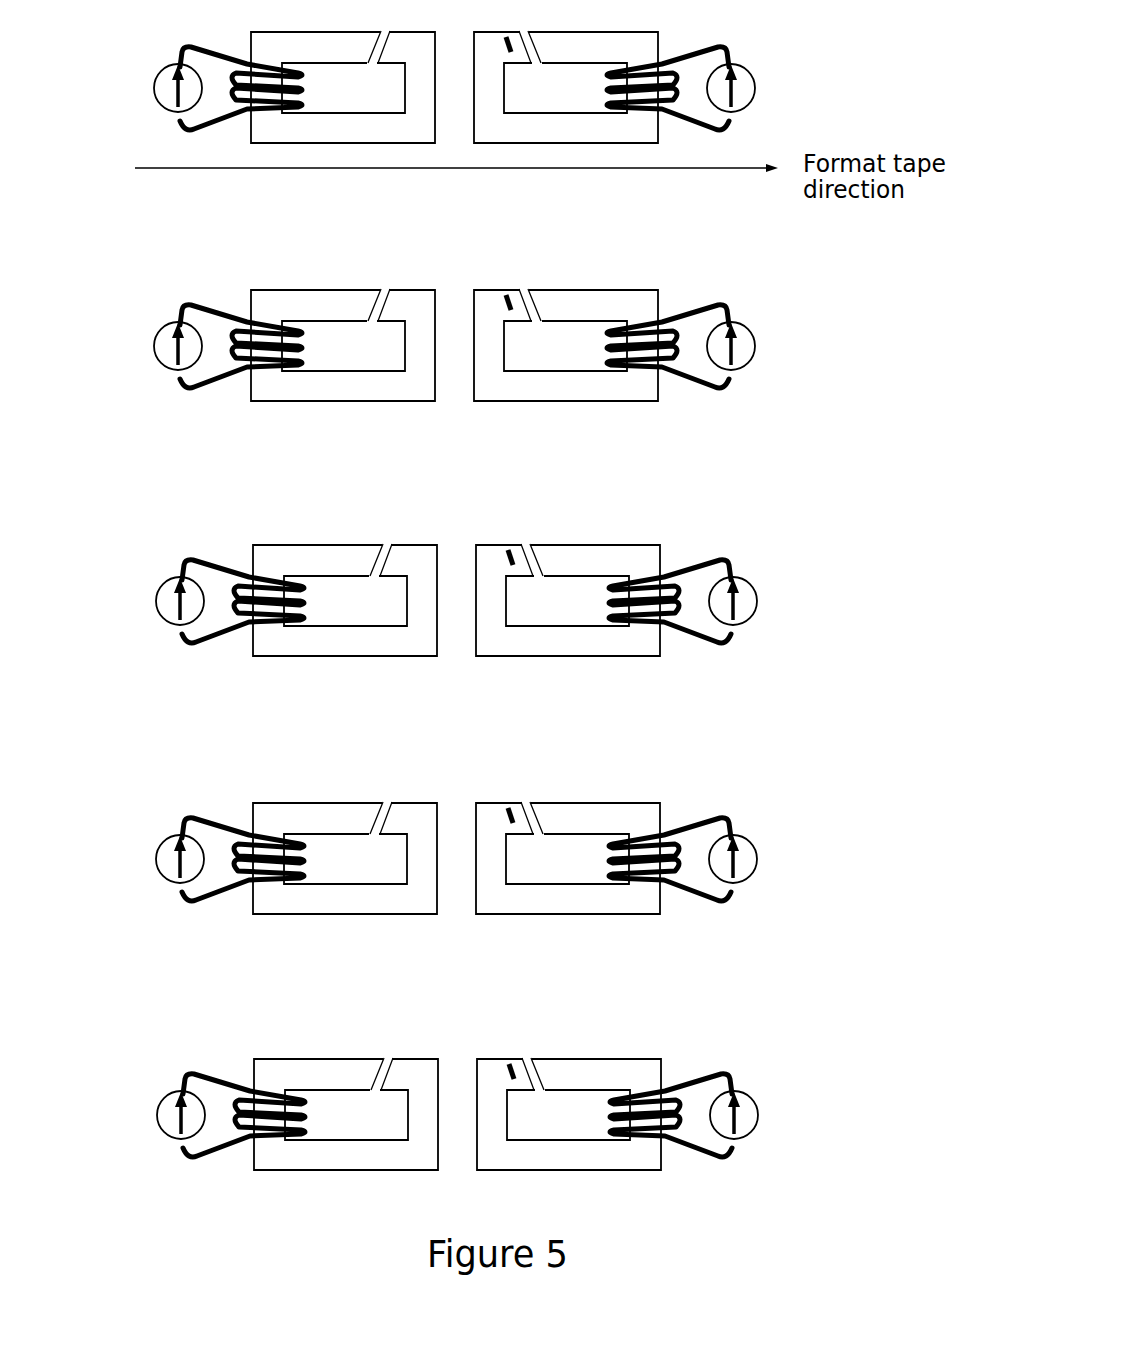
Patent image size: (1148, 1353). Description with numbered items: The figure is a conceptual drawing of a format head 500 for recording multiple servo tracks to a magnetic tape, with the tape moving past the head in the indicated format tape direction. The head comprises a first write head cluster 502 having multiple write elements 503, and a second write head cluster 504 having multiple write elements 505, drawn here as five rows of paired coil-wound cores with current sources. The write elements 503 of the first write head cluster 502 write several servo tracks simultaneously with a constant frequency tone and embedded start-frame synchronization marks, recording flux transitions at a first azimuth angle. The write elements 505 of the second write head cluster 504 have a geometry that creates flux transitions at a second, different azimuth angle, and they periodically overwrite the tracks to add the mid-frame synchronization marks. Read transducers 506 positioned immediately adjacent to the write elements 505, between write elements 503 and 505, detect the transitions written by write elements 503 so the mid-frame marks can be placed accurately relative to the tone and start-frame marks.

The format head 500 is at (476, 600).
The first write head cluster 502 is at (136, 687).
The write elements 503 is at (380, 558).
The second write head cluster 504 is at (751, 692).
The write elements 505 is at (540, 313).
The read transducers 506 is at (530, 313).